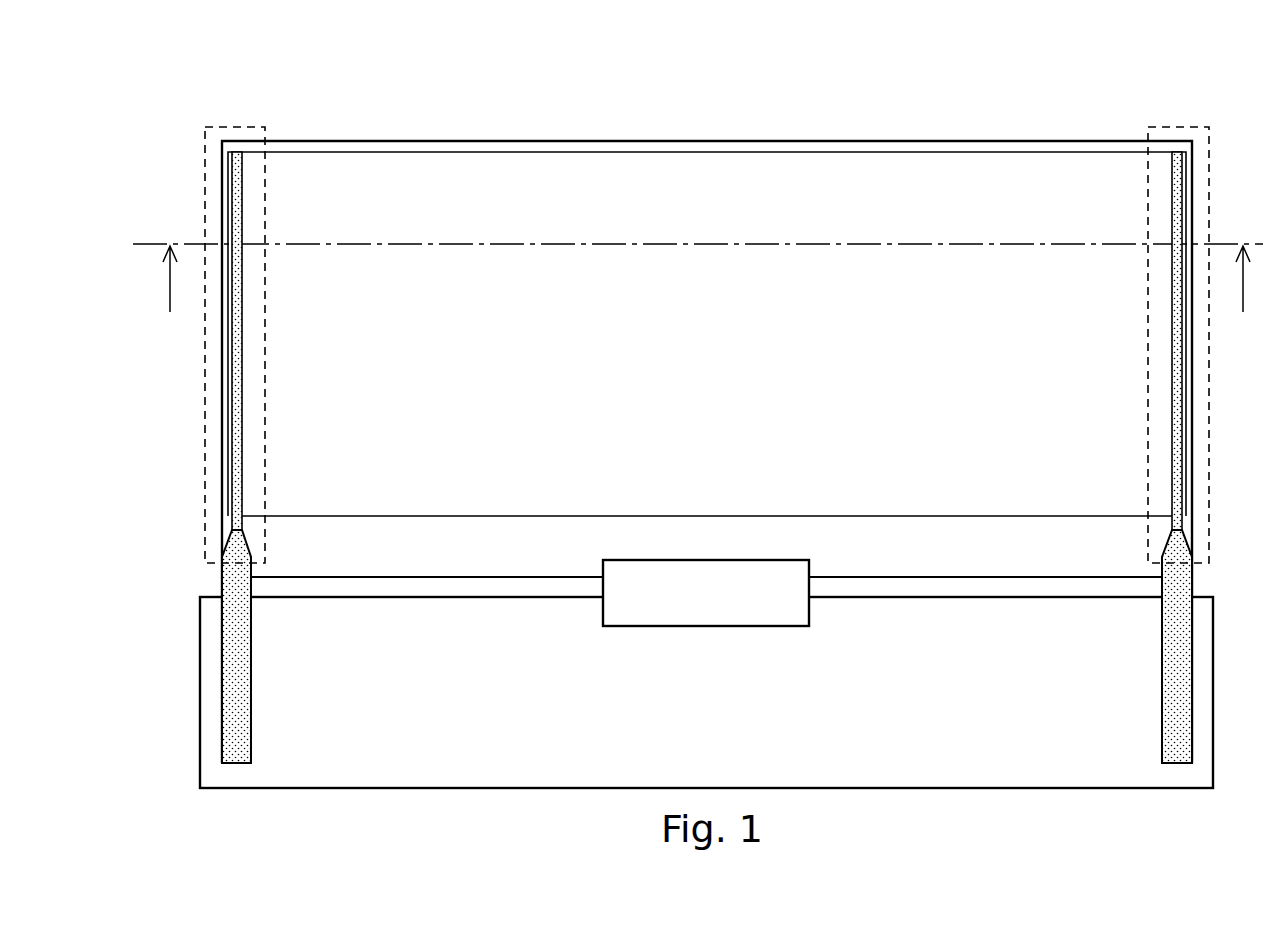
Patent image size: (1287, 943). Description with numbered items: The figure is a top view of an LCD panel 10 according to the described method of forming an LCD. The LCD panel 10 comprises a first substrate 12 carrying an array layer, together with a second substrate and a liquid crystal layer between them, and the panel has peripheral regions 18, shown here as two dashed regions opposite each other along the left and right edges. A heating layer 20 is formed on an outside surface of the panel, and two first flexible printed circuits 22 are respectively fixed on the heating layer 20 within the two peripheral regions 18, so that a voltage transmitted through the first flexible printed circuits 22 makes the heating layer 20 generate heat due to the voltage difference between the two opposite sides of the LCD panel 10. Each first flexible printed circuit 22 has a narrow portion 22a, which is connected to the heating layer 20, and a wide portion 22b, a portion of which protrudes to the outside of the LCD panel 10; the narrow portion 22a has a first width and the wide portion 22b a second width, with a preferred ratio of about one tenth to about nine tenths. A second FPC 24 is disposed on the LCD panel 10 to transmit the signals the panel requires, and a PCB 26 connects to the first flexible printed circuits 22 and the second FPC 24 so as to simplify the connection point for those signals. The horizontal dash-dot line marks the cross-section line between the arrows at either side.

The LCD panel 10 is at (659, 404).
The first substrate 12 is at (428, 140).
The peripheral region 18 is at (228, 125).
The heating layer 20 is at (707, 334).
The first flexible printed circuit 22 is at (624, 457).
The narrow portion 22a is at (236, 527).
The wide portion 22b is at (237, 623).
The second FPC 24 is at (706, 593).
The PCB 26 is at (706, 692).